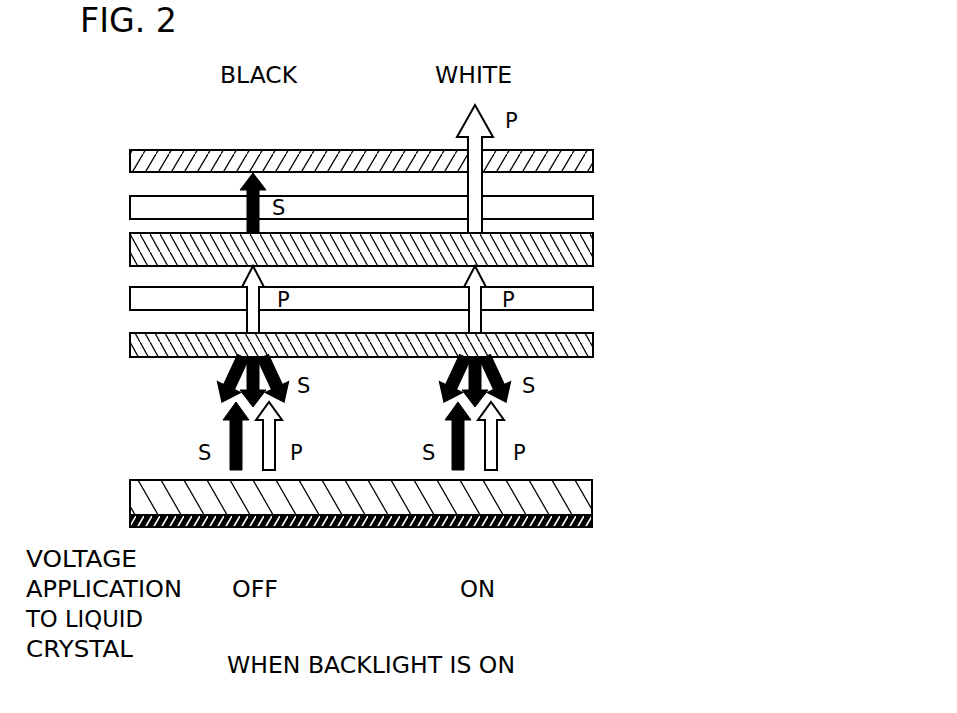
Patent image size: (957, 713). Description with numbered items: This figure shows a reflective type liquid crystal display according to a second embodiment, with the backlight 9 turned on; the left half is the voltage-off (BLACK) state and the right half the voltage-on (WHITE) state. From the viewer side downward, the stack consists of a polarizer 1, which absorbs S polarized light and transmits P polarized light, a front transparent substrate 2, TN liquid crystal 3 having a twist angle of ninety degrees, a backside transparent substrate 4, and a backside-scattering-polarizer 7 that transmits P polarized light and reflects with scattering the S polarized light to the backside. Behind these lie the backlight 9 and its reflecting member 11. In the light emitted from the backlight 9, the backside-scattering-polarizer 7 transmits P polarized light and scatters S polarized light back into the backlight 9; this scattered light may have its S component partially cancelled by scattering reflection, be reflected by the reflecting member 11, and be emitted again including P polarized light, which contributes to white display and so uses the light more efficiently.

The polarizer 1 is at (593, 158).
The transparent substrate 2 is at (588, 206).
The liquid crystal 3 is at (588, 250).
The transparent substrate 4 is at (588, 298).
The backside-scattering-polarizer 7 is at (588, 342).
The backlight 9 is at (588, 492).
The reflecting member 11 is at (592, 520).